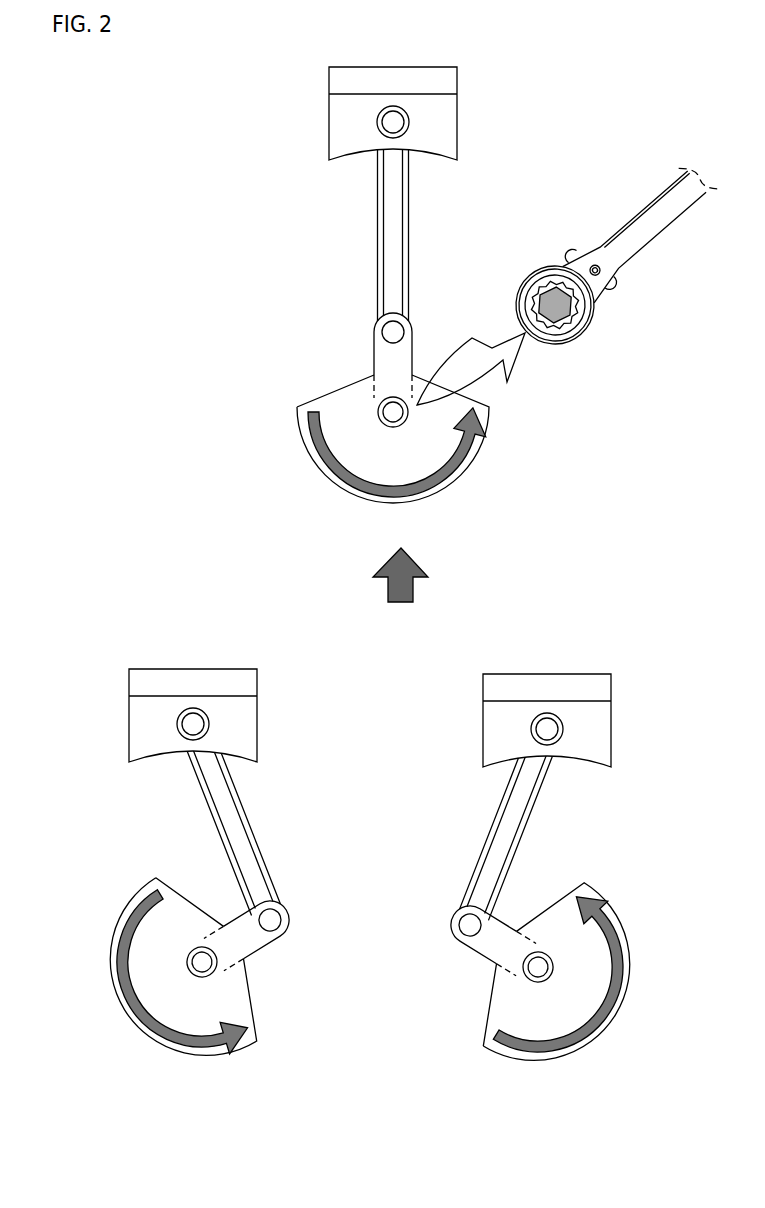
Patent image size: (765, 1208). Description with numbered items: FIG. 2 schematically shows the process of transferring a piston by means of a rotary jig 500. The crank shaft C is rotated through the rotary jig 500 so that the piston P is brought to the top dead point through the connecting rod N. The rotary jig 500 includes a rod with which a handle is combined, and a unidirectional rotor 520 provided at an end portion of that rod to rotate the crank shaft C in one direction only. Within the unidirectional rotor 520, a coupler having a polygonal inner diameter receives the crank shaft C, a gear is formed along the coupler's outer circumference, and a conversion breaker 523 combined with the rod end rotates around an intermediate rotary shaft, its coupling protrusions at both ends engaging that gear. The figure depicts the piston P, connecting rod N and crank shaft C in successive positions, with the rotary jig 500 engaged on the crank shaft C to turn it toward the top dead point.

The piston P is at (457, 112).
The connecting rod N is at (410, 230).
The crank shaft C is at (395, 415).
The rotary jig 500 is at (658, 198).
The unidirectional rotor 520 is at (518, 297).
The conversion breaker 523 is at (620, 290).